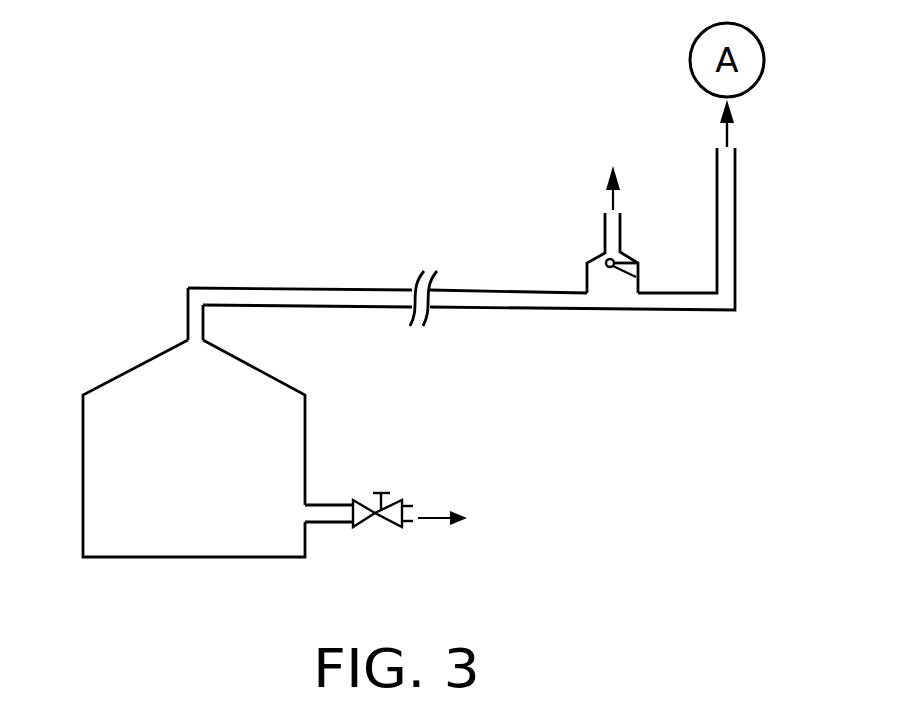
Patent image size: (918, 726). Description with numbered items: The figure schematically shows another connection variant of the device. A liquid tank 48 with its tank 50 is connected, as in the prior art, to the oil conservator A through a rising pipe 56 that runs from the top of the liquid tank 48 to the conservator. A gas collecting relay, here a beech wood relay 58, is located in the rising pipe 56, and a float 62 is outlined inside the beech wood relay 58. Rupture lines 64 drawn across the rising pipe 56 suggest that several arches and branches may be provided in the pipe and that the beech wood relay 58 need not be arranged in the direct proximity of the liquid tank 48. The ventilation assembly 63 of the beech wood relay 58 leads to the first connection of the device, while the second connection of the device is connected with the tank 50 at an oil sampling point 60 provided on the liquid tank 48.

The liquid tank 48 is at (76, 208).
The tank 50 is at (305, 437).
The rising pipe 56 is at (278, 288).
The beech wood relay 58 is at (585, 266).
The oil sampling point 60 is at (348, 525).
The float 62 is at (640, 281).
The ventilation assembly 63 is at (622, 225).
The rupture lines 64 is at (410, 259).